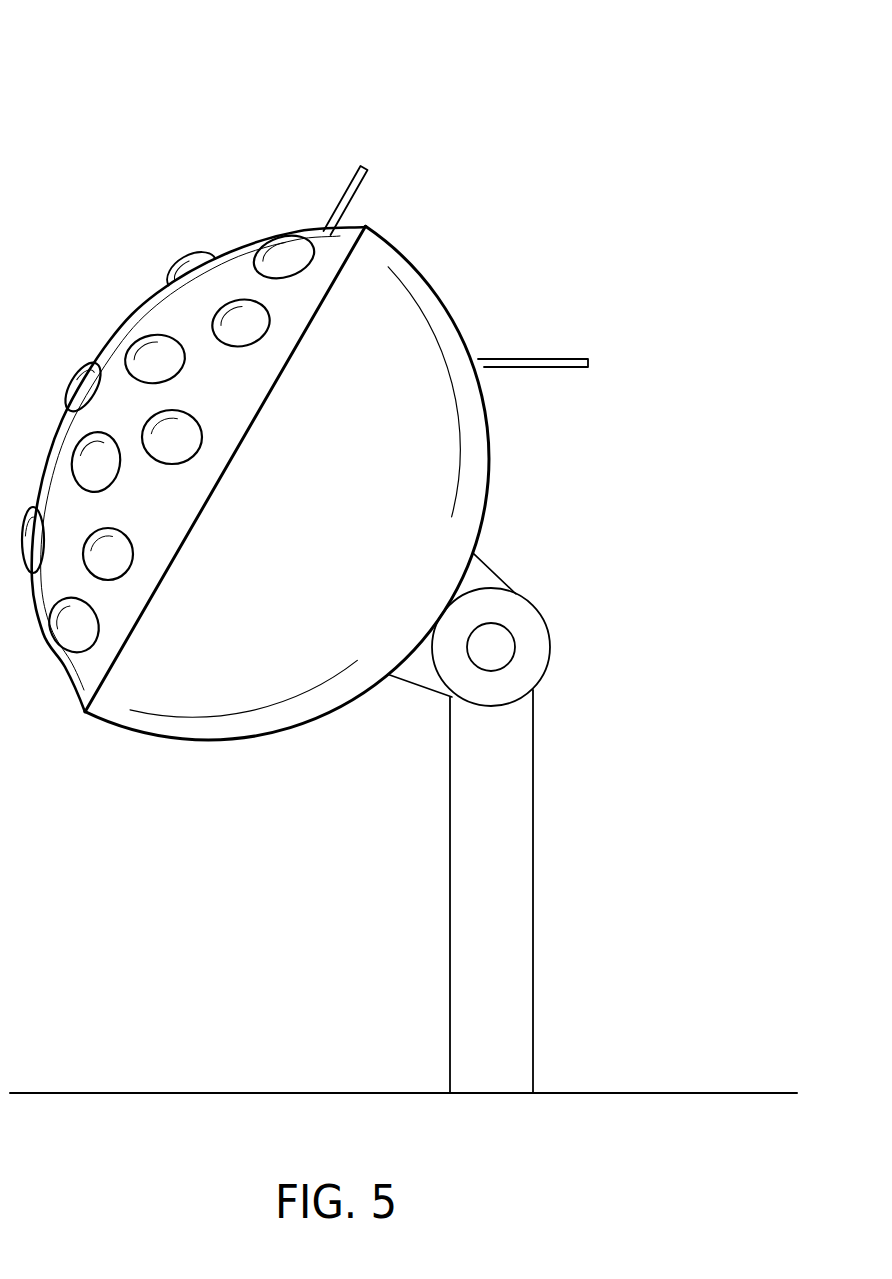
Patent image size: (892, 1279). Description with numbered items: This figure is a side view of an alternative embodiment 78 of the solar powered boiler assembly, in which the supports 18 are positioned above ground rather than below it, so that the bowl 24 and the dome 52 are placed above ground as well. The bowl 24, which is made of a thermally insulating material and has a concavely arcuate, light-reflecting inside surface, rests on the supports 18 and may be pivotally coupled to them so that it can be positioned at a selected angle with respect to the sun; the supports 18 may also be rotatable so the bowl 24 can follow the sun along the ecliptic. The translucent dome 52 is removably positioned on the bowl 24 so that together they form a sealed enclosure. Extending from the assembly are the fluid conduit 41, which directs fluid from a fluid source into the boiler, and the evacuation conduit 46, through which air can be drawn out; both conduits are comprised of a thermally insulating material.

The alternative embodiment 78 is at (198, 90).
The bowl 24 is at (442, 297).
The dome 52 is at (157, 293).
The evacuation conduit 46 is at (358, 185).
The fluid conduit 41 is at (547, 360).
The supports 18 is at (533, 813).